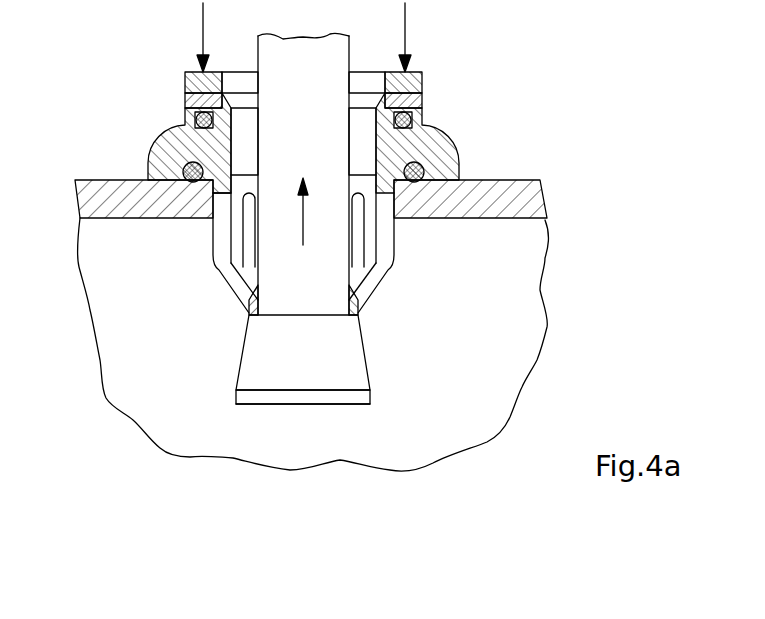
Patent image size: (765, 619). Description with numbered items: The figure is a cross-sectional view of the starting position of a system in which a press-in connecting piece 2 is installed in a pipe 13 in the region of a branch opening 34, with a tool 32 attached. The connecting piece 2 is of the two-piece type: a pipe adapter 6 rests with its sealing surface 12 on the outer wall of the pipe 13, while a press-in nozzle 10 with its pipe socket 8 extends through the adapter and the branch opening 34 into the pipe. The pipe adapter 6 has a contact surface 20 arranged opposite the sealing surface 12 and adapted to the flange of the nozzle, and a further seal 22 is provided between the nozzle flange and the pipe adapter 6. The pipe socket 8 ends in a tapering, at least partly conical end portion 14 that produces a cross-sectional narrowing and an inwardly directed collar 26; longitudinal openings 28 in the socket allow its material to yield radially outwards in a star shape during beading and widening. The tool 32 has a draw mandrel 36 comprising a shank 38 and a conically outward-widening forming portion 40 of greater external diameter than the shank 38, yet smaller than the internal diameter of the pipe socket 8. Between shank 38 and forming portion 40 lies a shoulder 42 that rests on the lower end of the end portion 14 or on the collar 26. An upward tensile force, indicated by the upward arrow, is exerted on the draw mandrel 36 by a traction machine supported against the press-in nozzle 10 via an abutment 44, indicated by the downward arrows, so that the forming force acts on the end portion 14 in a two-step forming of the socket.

The press-in connecting piece 2 is at (458, 79).
The pipe adapter 6 is at (425, 150).
The pipe socket 8 is at (370, 247).
The press-in nozzle 10 is at (415, 237).
The sealing surface 12 is at (458, 188).
The pipe 13 is at (93, 197).
The tapering end portion 14 is at (396, 300).
The contact surface 20 is at (185, 103).
The further seal 22 is at (197, 124).
The collar 26 is at (358, 302).
The openings 28 is at (223, 248).
The tool 32 is at (276, 422).
The branch opening 34 is at (215, 216).
The draw mandrel 36 is at (335, 378).
The shank 38 is at (278, 263).
The forming portion 40 is at (252, 365).
The shoulder 42 is at (253, 320).
The abutment 44 is at (187, 82).